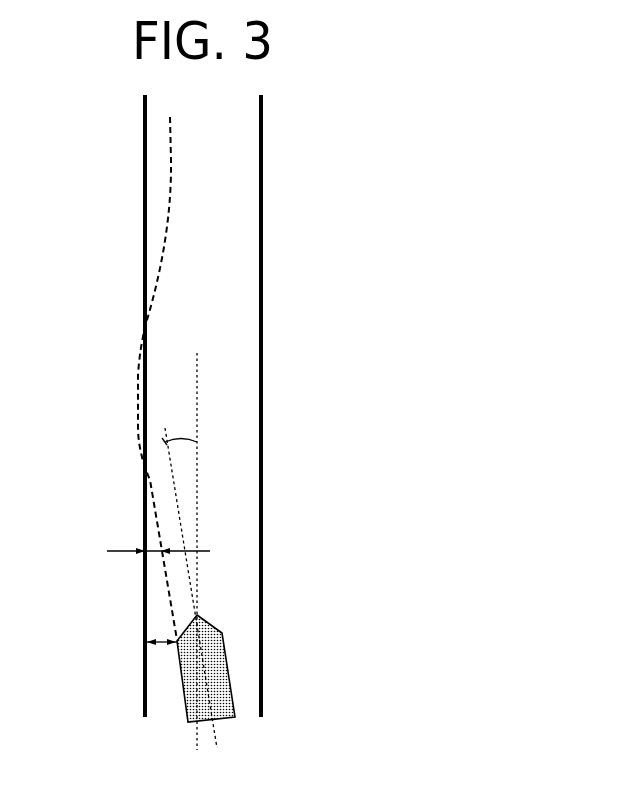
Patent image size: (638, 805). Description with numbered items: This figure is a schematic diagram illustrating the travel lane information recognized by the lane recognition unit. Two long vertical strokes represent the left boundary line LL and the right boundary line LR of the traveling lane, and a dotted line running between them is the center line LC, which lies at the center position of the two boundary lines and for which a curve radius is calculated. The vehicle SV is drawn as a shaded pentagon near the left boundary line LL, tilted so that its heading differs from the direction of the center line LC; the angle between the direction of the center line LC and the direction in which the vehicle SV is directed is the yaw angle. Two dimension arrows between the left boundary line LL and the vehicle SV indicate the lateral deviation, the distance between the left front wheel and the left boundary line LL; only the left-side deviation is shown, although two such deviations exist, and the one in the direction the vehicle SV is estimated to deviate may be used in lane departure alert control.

The left boundary line LL is at (143, 119).
The right boundary line LR is at (263, 120).
The center line LC is at (198, 372).
The vehicle SV is at (215, 662).